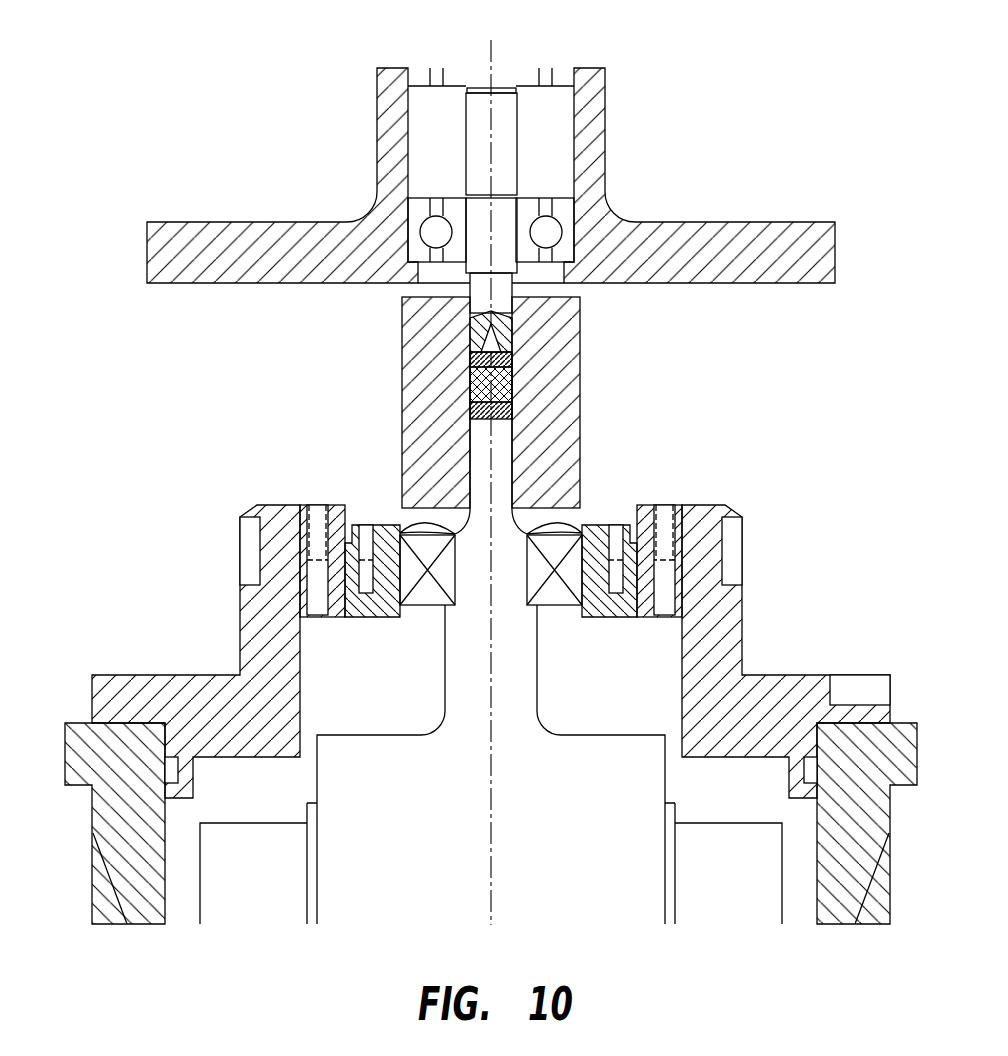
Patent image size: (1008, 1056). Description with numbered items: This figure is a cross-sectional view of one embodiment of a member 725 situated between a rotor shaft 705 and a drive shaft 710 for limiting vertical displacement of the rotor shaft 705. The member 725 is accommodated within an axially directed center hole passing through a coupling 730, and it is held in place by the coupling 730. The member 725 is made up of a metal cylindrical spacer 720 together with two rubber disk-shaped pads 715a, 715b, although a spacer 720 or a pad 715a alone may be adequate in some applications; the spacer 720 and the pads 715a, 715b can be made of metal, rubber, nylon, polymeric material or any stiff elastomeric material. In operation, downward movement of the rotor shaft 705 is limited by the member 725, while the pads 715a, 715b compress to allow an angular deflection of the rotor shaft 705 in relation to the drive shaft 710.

The rotor shaft 705 is at (518, 148).
The drive shaft 710 is at (513, 472).
The pad 715a is at (513, 358).
The pad 715b is at (513, 412).
The spacer 720 is at (513, 385).
The member 725 is at (458, 377).
The coupling 730 is at (412, 417).